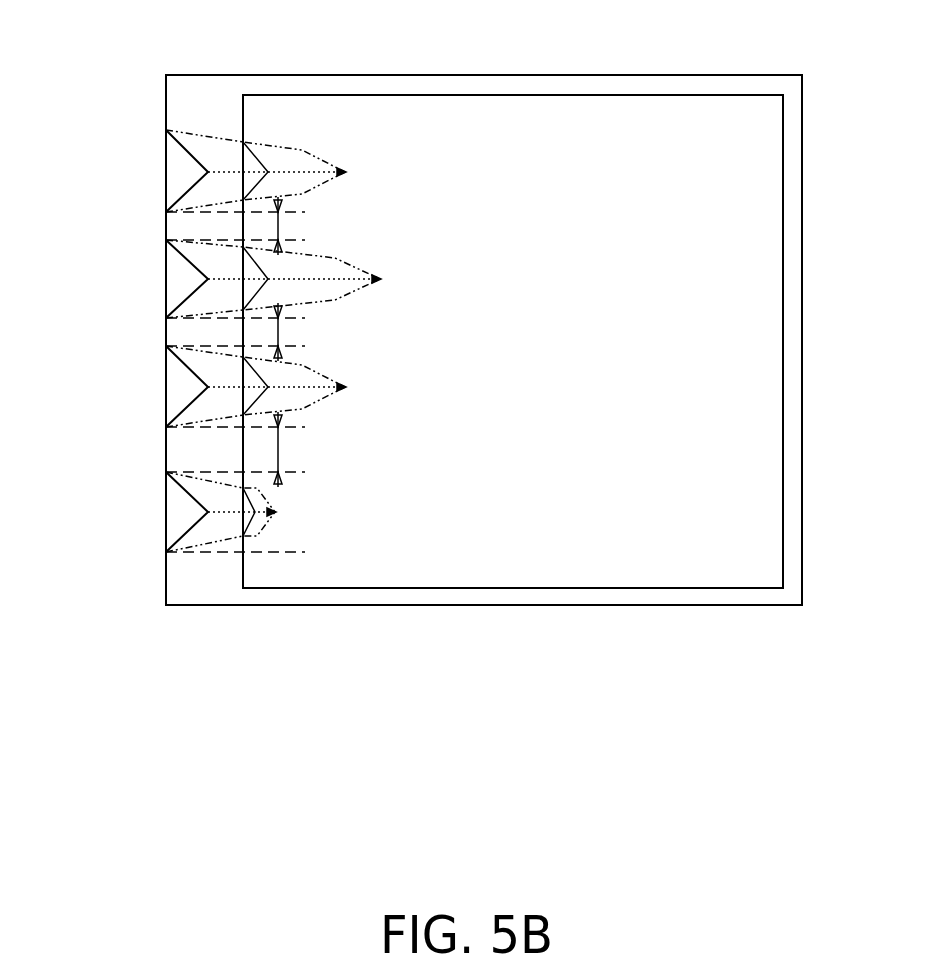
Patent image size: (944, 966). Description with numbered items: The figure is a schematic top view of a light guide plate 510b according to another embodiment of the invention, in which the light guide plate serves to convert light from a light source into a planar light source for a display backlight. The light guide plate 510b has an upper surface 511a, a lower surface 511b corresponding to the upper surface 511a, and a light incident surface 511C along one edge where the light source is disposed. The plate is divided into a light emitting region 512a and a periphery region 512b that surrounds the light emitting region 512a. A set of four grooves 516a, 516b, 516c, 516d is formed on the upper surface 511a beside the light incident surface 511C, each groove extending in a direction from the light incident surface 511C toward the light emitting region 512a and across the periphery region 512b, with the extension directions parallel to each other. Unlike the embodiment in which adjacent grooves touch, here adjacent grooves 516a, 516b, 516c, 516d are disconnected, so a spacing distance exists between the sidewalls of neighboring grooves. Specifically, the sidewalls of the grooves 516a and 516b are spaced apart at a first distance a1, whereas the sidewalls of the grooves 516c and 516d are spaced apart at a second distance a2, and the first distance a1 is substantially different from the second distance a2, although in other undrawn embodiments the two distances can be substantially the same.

The light guide plate 510b is at (718, 673).
The upper surface 511a is at (742, 600).
The lower surface 511b is at (619, 609).
The light incident surface 511C is at (157, 105).
The light emitting region 512a is at (464, 118).
The periphery region 512b is at (200, 100).
The groove 516a is at (224, 185).
The groove 516b is at (224, 292).
The groove 516c is at (224, 400).
The groove 516d is at (224, 525).
The first distance a1 is at (289, 279).
The second distance a2 is at (290, 449).